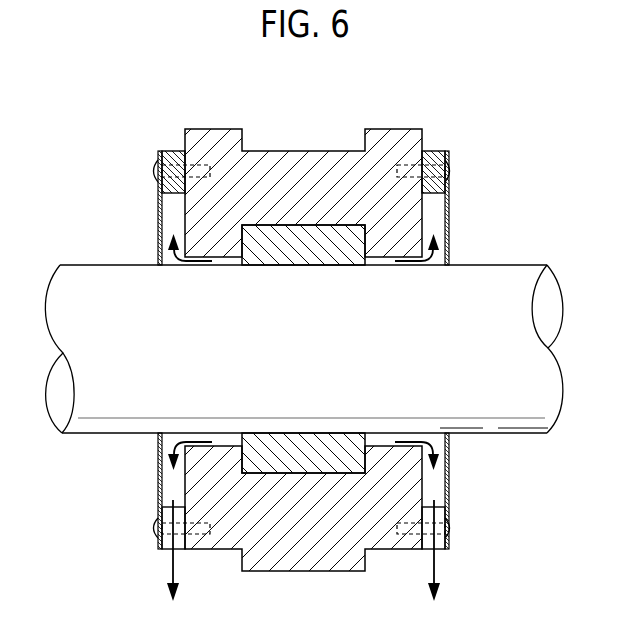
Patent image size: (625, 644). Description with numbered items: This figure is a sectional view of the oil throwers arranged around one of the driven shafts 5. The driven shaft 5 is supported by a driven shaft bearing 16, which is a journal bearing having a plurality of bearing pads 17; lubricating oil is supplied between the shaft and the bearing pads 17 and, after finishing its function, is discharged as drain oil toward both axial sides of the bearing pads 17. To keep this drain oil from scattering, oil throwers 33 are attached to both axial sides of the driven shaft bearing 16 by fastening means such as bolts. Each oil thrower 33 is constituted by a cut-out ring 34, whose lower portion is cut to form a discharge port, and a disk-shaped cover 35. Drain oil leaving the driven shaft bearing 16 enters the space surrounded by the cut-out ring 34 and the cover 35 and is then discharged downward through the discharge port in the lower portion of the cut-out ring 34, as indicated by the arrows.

The driven shaft 5 is at (93, 280).
The driven shaft bearing 16 is at (308, 168).
The bearing pad 17 is at (308, 458).
The oil thrower 33 is at (458, 184).
The cut-out ring 34 is at (173, 152).
The cover 35 is at (158, 213).